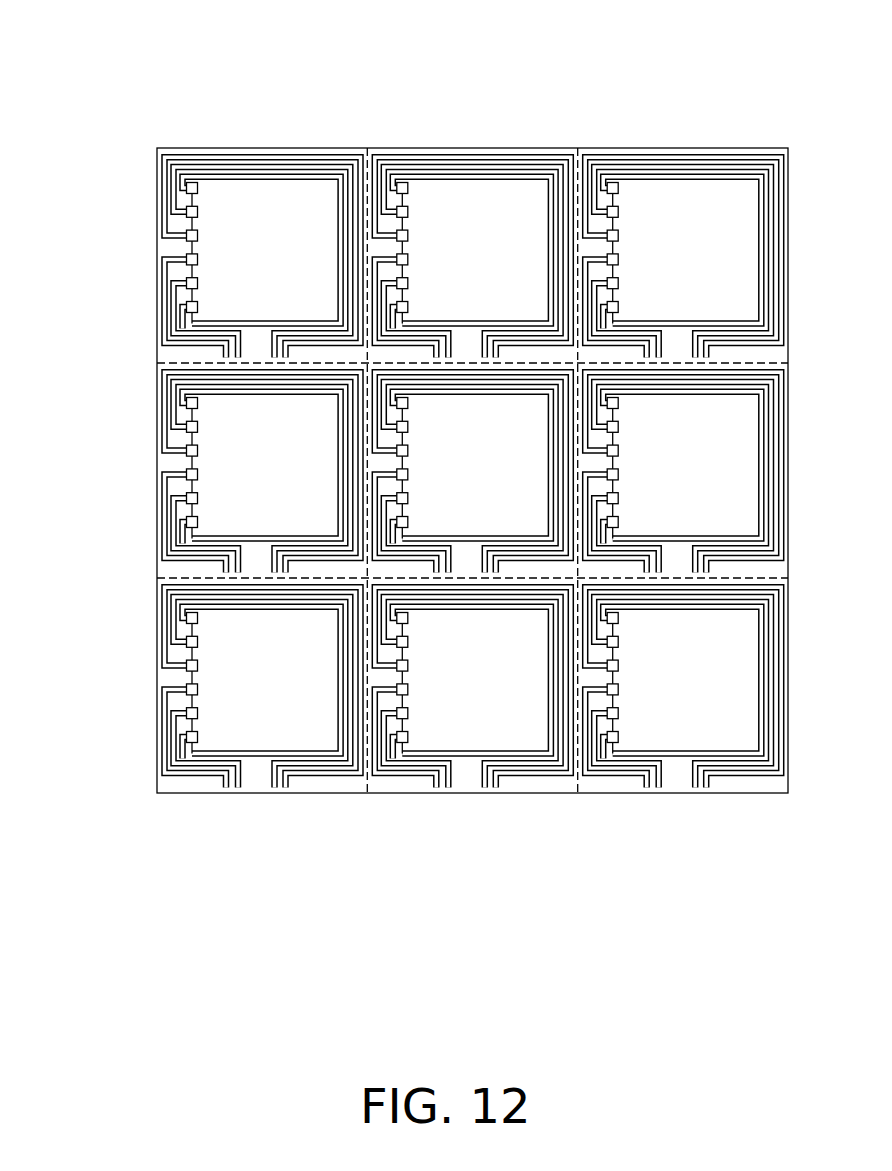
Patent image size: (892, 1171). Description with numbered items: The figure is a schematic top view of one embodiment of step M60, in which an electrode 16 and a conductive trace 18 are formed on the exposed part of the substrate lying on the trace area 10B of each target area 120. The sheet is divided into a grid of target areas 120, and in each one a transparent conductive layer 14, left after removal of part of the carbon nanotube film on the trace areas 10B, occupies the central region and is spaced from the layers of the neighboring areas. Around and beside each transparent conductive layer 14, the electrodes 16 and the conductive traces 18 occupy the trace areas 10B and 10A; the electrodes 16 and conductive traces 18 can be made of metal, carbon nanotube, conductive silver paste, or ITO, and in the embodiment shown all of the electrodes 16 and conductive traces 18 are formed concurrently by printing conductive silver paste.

The step M60 is at (408, 399).
The target area 120 is at (133, 308).
The first coil section 10A is at (202, 259).
The trace area 10B is at (195, 327).
The transparent conductive layer 14 is at (265, 197).
The electrode 16 is at (188, 208).
The conductive trace 18 is at (202, 158).